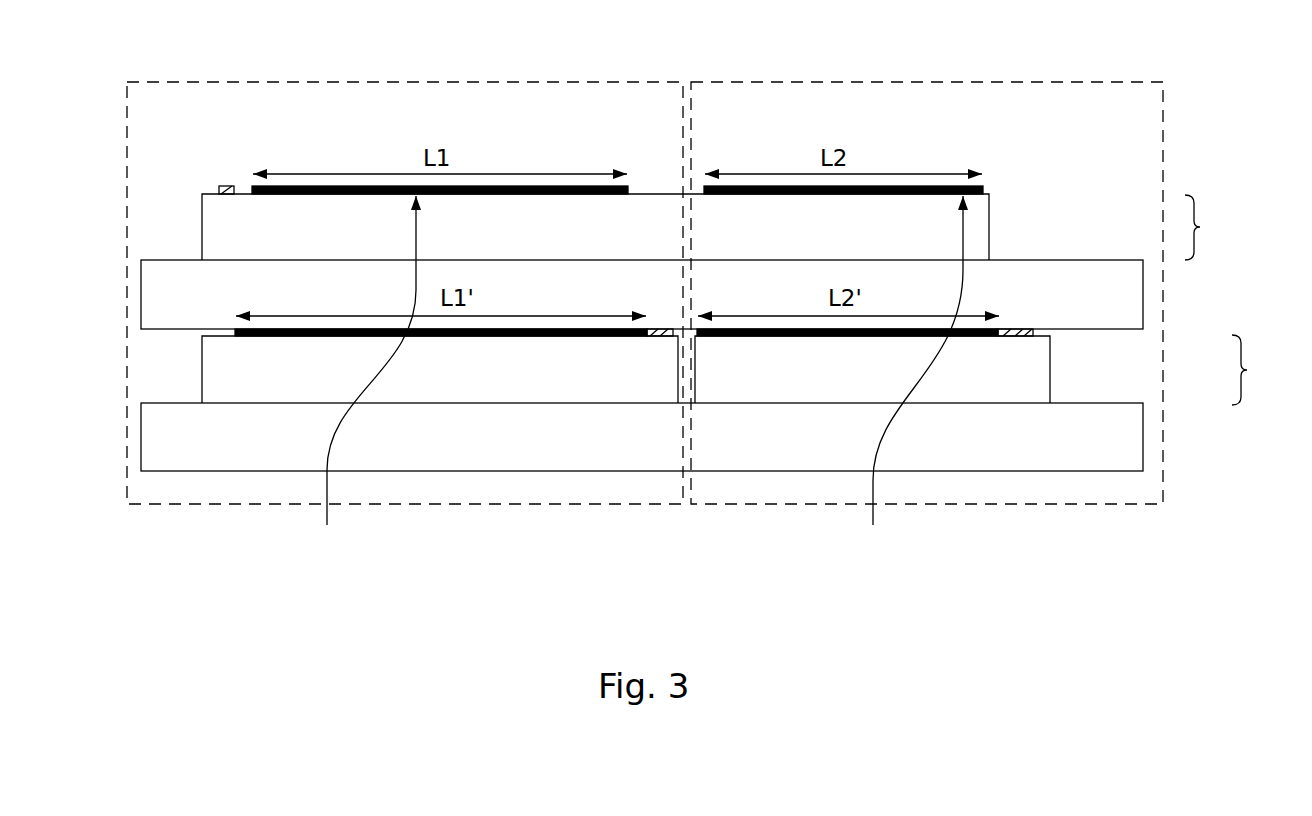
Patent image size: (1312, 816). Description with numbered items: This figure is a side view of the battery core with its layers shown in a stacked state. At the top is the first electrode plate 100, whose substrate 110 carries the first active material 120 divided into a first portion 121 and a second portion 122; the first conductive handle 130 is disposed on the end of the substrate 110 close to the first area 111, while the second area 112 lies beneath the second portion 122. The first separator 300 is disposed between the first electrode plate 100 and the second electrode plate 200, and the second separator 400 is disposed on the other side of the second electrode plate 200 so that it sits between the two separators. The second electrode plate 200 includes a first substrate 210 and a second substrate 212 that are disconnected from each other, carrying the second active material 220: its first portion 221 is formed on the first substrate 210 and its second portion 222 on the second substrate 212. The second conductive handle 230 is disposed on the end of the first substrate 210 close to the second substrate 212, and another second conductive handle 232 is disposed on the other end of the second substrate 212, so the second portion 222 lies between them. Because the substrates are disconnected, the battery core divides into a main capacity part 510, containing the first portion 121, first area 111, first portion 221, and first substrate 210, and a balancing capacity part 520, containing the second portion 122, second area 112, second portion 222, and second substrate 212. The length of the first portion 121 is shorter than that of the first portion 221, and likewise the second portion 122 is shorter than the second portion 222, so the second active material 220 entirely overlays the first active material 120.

The first electrode plate 100 is at (1216, 227).
The substrate 110 is at (222, 237).
The first area 111 is at (364, 376).
The second area 112 is at (908, 376).
The first active material 120 is at (735, 188).
The first portion of the first active material 121 is at (380, 186).
The second portion of the first active material 122 is at (899, 186).
The first conductive handle 130 is at (227, 186).
The second electrode plate 200 is at (1262, 370).
The first substrate 210 is at (210, 375).
The second substrate 212 is at (1053, 383).
The second active material 220 is at (750, 337).
The first portion of the second active material 221 is at (315, 336).
The second portion of the second active material 222 is at (825, 336).
The second conductive handle 230 is at (583, 336).
The another second conductive handle 232 is at (1027, 336).
The first separator 300 is at (152, 297).
The second separator 400 is at (162, 443).
The main capacity part 510 is at (188, 82).
The balancing capacity part 520 is at (732, 82).